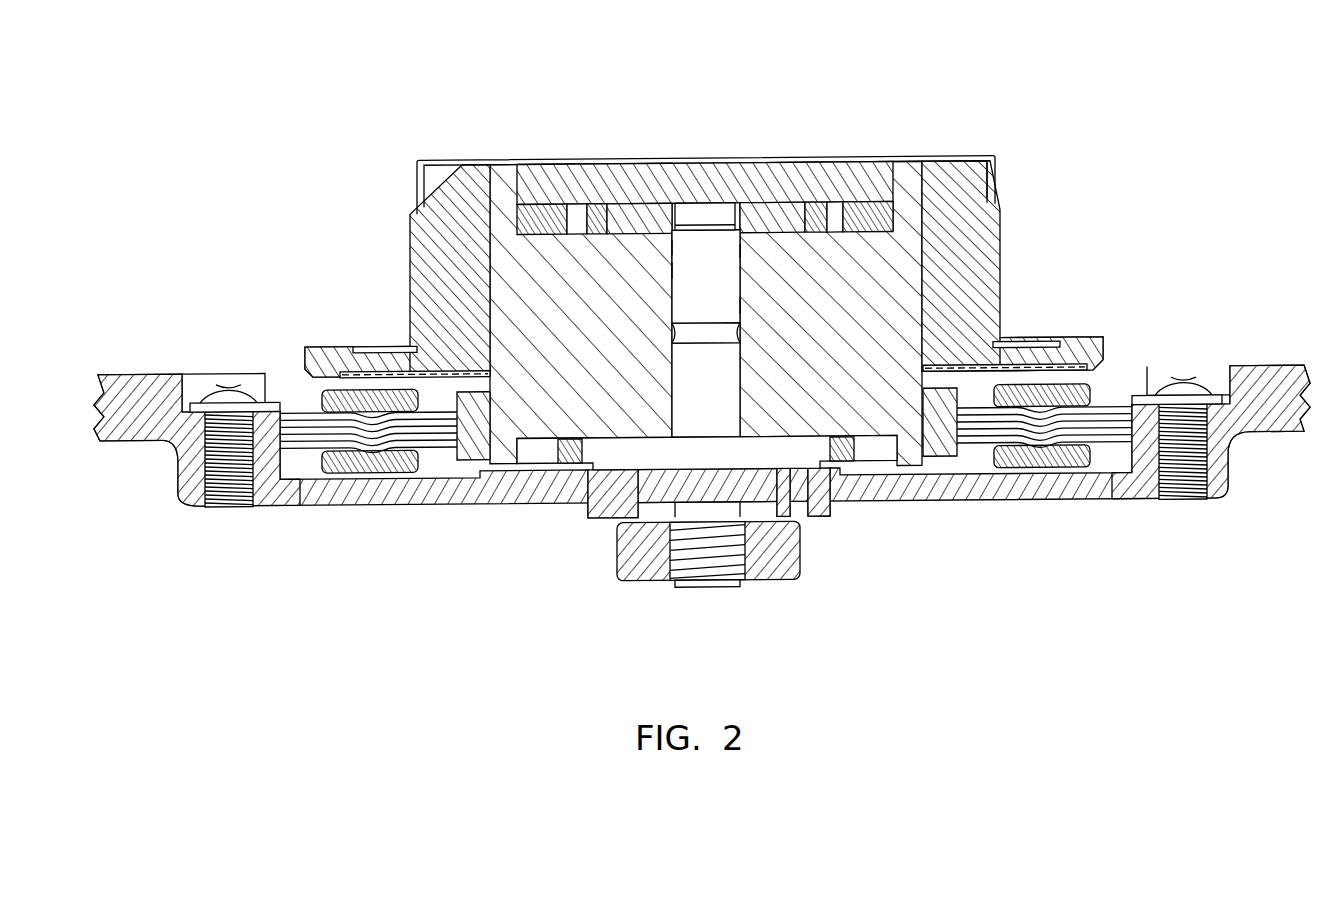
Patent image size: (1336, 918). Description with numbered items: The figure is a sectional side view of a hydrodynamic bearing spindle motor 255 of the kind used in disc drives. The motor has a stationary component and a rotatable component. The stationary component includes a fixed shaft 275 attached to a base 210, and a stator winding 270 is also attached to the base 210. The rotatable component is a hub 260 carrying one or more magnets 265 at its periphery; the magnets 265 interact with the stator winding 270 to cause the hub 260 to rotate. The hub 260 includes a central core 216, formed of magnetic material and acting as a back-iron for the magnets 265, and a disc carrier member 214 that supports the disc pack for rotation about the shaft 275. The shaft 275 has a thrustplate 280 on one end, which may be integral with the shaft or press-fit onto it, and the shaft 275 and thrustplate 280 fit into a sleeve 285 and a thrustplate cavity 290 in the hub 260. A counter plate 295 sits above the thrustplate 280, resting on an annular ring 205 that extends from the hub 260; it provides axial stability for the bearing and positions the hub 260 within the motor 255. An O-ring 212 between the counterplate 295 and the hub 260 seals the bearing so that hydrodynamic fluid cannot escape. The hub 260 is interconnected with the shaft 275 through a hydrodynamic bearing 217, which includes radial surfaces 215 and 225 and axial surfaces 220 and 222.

The annular ring 205 is at (923, 258).
The base 210 is at (985, 482).
The O-ring 212 is at (847, 229).
The disc carrier member 214 is at (1000, 242).
The radial surface 215 is at (662, 269).
The core 216 is at (923, 340).
The hydrodynamic bearing 217 is at (682, 305).
The axial surface 220 is at (639, 189).
The axial surface 222 is at (657, 220).
The radial surface 225 is at (668, 246).
The hydrodynamic bearing spindle motor 255 is at (360, 169).
The hub 260 is at (402, 320).
The magnet 265 is at (942, 461).
The stator winding 270 is at (1088, 469).
The shaft 275 is at (684, 392).
The thrustplate 280 is at (778, 200).
The sleeve 285 is at (923, 309).
The thrustplate cavity 290 is at (843, 208).
The counter plate 295 is at (578, 160).